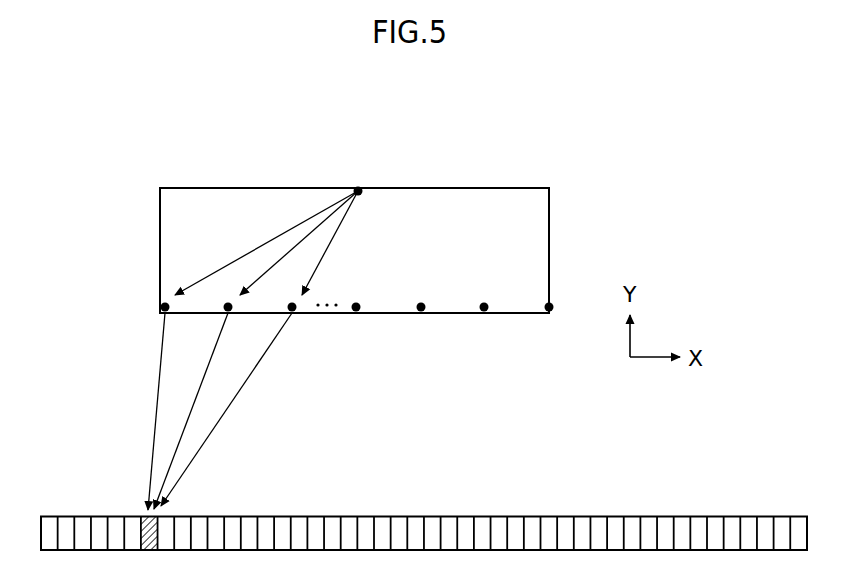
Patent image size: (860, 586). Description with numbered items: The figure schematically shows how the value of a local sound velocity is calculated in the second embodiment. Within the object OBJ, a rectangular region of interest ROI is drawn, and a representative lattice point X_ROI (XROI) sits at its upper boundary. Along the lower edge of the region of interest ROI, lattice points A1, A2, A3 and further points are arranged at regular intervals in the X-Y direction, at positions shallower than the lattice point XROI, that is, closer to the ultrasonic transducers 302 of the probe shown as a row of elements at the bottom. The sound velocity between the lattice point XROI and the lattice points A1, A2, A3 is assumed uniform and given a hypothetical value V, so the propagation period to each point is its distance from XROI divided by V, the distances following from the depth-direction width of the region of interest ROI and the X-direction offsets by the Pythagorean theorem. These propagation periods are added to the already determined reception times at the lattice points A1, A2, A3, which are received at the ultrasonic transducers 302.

The ultrasonic transducers 302 is at (66, 521).
The region of interest ROI is at (212, 198).
The lattice point X_ROI XROI is at (313, 224).
The object OBJ is at (624, 230).
The lattice point A1 is at (96, 399).
The lattice point A2 is at (193, 399).
The lattice point A3 is at (229, 398).